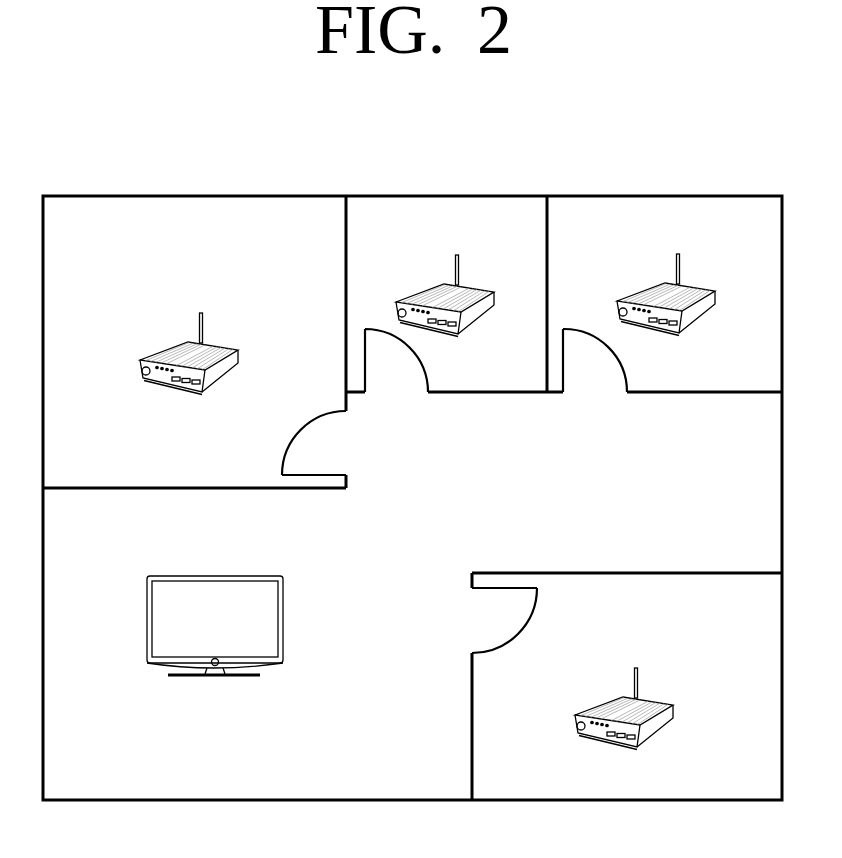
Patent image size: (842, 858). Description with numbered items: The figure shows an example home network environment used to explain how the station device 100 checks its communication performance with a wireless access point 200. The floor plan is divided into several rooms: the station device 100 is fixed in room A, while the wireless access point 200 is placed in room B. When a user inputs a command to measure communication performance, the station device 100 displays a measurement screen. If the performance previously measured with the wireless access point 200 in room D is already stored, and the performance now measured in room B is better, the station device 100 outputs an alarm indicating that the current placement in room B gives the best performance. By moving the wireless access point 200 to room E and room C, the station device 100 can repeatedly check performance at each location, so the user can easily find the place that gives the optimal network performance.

The station device 100 is at (250, 576).
The wireless access point 200 is at (218, 345).
The room A is at (412, 498).
The room B is at (194, 342).
The room C is at (627, 686).
The room D is at (446, 294).
The room E is at (664, 303).